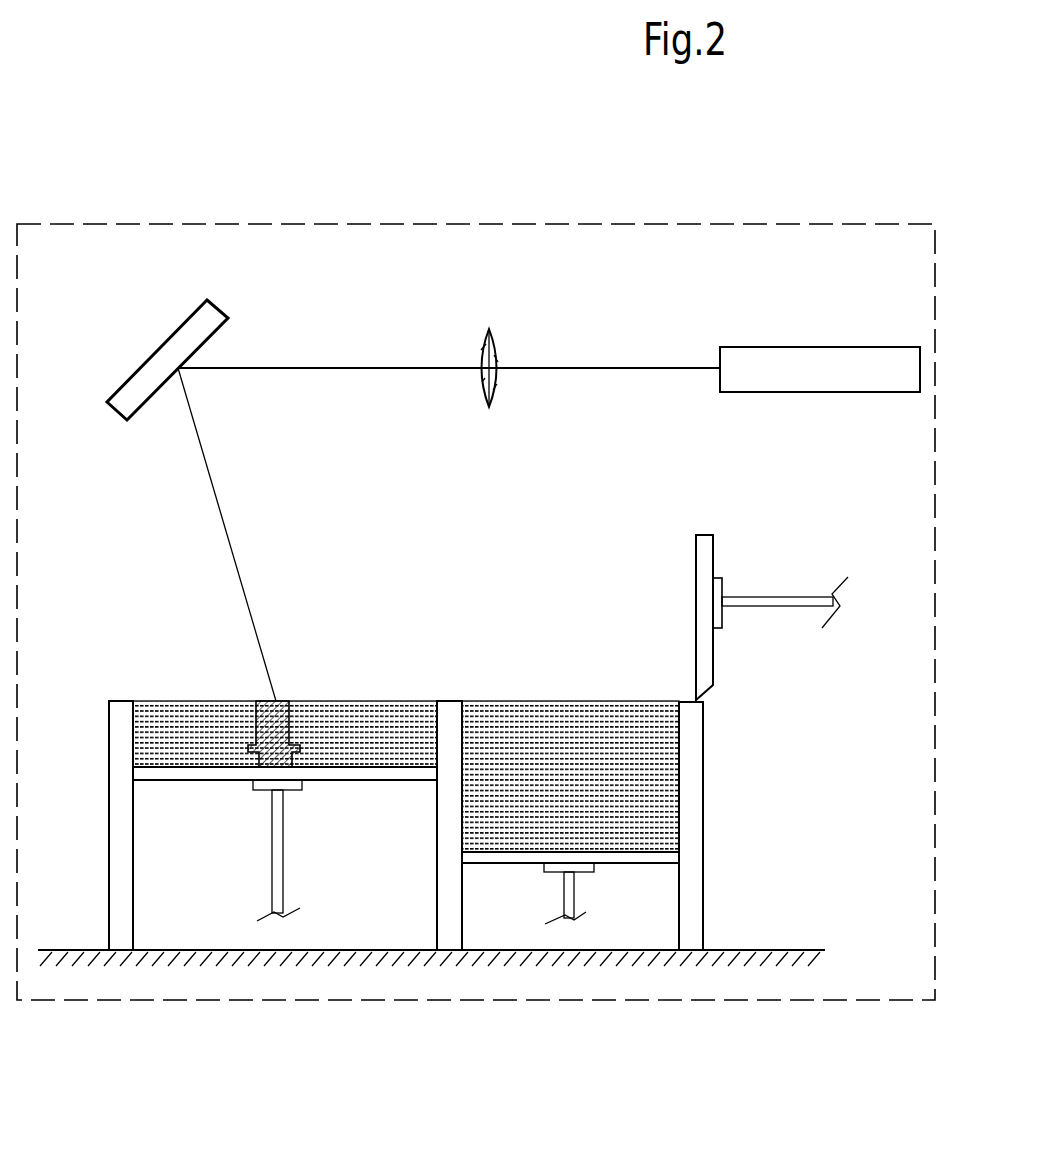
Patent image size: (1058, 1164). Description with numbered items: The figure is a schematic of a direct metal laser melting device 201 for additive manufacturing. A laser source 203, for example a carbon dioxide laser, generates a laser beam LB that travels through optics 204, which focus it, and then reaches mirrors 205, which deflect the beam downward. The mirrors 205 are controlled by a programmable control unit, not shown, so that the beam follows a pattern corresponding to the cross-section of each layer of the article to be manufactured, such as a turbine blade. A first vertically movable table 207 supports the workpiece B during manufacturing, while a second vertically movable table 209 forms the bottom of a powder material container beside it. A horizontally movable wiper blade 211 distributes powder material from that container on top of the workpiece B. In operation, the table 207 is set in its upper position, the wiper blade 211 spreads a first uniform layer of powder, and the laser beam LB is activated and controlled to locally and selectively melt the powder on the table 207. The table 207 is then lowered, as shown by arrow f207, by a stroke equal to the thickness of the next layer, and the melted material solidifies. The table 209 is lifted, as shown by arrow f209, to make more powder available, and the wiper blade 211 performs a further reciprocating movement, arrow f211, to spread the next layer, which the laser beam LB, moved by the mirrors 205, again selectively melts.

The DMLM device 201 is at (750, 215).
The laser source 203 is at (838, 373).
The optics 204 is at (500, 352).
The mirrors 205 is at (190, 336).
The first vertically movable table 207 is at (218, 773).
The second vertically movable table 209 is at (520, 857).
The wiper blade 211 is at (703, 557).
The laser beam LB is at (358, 367).
The workpiece B is at (280, 701).
The arrow f207 is at (315, 822).
The arrow f209 is at (622, 877).
The arrow f211 is at (638, 600).